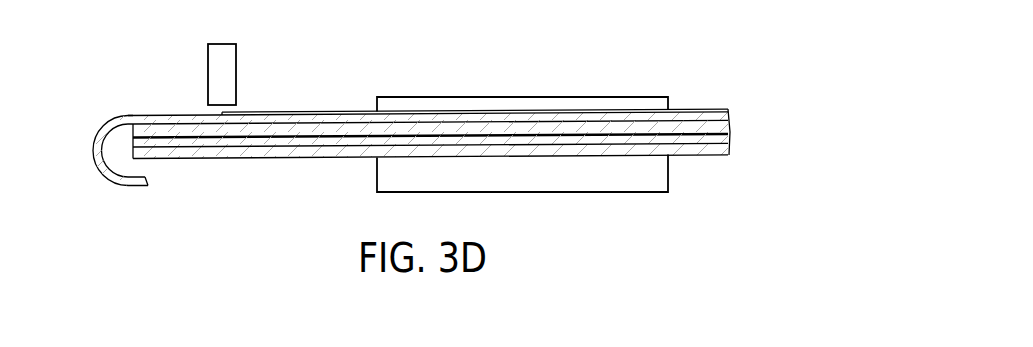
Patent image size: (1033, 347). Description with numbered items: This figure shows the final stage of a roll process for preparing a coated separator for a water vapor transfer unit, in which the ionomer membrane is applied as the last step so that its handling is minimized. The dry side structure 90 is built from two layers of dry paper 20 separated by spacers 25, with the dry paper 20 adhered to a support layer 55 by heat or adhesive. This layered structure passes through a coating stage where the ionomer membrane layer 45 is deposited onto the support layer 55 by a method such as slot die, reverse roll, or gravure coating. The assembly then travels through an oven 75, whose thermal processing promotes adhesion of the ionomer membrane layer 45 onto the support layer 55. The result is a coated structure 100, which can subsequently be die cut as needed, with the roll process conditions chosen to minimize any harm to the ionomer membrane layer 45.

The dry paper 20 is at (133, 128).
The spacers 25 is at (133, 141).
The ionomer membrane layer 45 is at (322, 112).
The support layer 55 is at (163, 115).
The oven 75 is at (528, 97).
The dry side structure 90 is at (116, 119).
The coated structure 100 is at (696, 109).